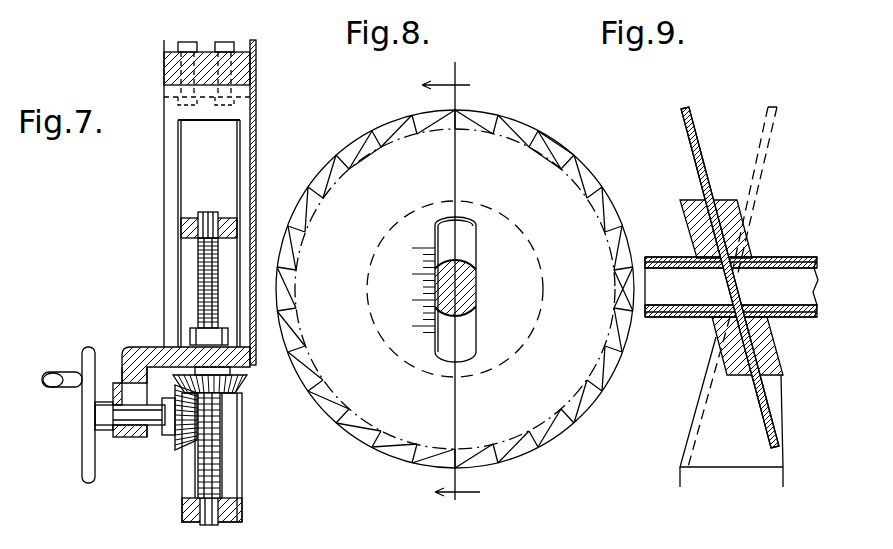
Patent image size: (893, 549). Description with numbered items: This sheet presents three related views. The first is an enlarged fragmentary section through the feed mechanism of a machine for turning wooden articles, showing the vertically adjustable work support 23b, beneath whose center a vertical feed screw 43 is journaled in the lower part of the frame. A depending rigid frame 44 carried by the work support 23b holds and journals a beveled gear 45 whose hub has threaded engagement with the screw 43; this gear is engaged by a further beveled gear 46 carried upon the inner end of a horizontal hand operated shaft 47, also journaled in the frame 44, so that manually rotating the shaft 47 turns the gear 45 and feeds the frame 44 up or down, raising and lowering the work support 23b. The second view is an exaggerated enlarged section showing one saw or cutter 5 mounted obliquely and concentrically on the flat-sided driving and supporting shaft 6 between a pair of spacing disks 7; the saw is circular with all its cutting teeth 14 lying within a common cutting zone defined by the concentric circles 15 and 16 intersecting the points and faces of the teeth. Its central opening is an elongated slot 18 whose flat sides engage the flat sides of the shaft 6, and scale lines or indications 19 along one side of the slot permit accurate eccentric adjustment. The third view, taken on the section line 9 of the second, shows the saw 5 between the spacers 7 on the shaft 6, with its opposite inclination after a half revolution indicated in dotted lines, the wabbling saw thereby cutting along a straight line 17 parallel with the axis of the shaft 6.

In FIG. 8, the saw or cutter 5 is at (542, 178).
In FIG. 9, the saw or cutter 5 is at (703, 155).
In FIG. 8, the driving and supporting shaft 6 is at (467, 307).
In FIG. 9, the driving and supporting shaft 6 is at (660, 257).
In FIG. 8, the spacing disk 7 is at (550, 278).
In FIG. 9, the spacing disk 7 is at (722, 200).
In FIG. 8, the section line 9— 9 is at (456, 293).
In FIG. 8, the cutting teeth 14 is at (453, 281).
In FIG. 9, the cutting teeth 14 is at (690, 118).
In FIG. 8, the concentric circle 15 is at (351, 143).
In FIG. 8, the concentric circle 16 is at (369, 155).
In FIG. 9, the straight line of cut 17 is at (735, 467).
In FIG. 8, the elongated slot 18 is at (477, 263).
In FIG. 9, the elongated slot 18 is at (745, 340).
In FIG. 8, the scale lines or indications 19 is at (407, 284).
In FIG. 7, the work support 23b is at (250, 72).
In FIG. 7, the vertical feed screw 43 is at (196, 282).
In FIG. 7, the depending rigid frame 44 is at (233, 465).
In FIG. 7, the beveled gear 45 is at (240, 393).
In FIG. 7, the beveled gear 46 is at (177, 452).
In FIG. 7, the horizontal hand operated shaft 47 is at (135, 427).